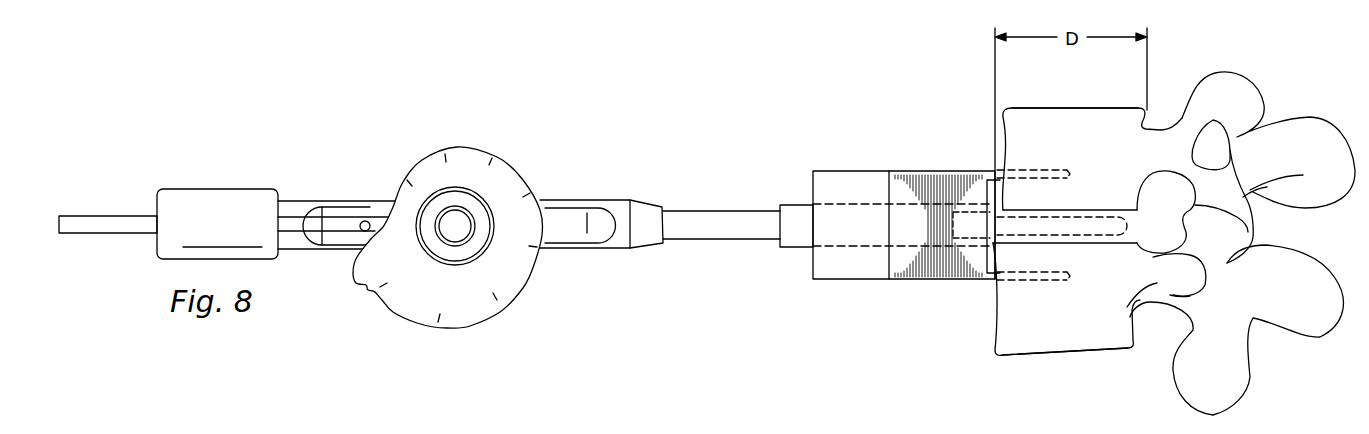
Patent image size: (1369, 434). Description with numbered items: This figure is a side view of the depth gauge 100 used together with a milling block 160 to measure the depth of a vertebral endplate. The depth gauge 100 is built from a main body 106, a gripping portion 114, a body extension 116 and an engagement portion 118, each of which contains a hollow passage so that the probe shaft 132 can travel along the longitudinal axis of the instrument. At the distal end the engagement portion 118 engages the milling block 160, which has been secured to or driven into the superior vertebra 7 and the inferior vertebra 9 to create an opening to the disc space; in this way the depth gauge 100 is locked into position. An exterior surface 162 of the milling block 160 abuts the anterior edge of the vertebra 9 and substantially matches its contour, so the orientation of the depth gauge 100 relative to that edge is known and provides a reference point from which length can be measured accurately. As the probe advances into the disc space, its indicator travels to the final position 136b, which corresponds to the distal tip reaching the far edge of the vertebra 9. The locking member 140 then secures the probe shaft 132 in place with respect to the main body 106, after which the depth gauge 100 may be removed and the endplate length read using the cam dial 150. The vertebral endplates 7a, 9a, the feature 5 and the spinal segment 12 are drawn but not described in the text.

The depth gauge 100 is at (389, 92).
The probe shaft 132 is at (108, 216).
The gripping portion 114 is at (213, 189).
The final position 136b is at (347, 218).
The locking member 140 is at (458, 207).
The cam dial 150 is at (521, 290).
The main body 106 is at (617, 199).
The body extension 116 is at (722, 240).
The engagement portion 118 is at (797, 205).
The milling block 160 is at (862, 171).
The exterior surface 162 is at (997, 172).
The superior vertebra 7 is at (1092, 159).
The upper vertebra end plate 7a is at (1102, 108).
The inferior vertebra 9 is at (1066, 299).
The lower vertebra end plate 9a is at (1098, 353).
The intervertebral foramen 5 is at (1150, 222).
The spine segment 12 is at (1275, 227).